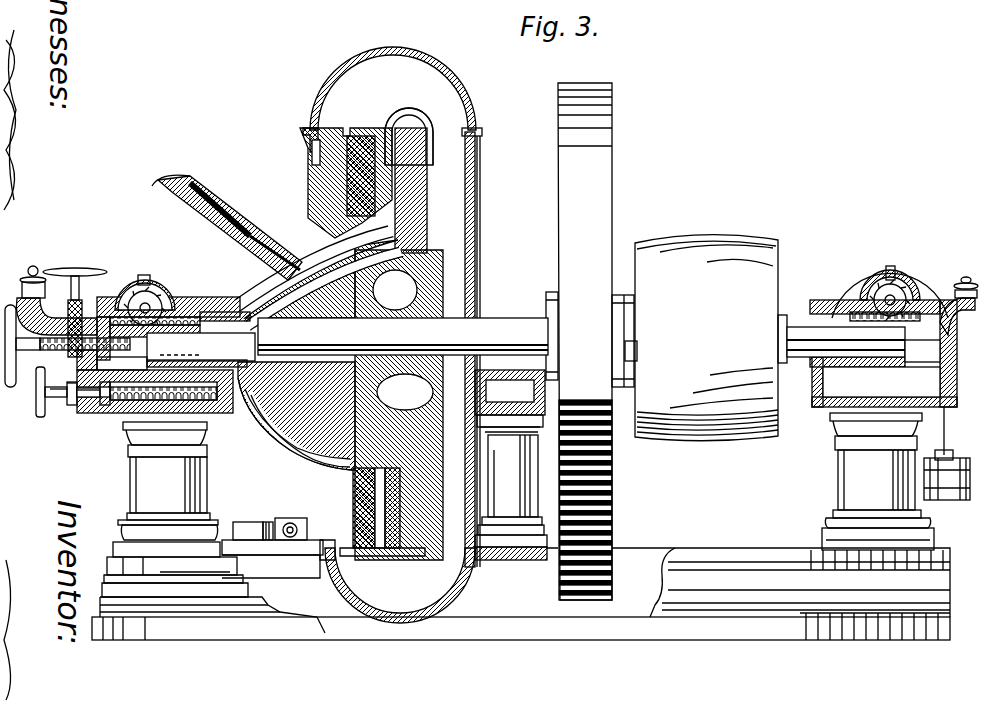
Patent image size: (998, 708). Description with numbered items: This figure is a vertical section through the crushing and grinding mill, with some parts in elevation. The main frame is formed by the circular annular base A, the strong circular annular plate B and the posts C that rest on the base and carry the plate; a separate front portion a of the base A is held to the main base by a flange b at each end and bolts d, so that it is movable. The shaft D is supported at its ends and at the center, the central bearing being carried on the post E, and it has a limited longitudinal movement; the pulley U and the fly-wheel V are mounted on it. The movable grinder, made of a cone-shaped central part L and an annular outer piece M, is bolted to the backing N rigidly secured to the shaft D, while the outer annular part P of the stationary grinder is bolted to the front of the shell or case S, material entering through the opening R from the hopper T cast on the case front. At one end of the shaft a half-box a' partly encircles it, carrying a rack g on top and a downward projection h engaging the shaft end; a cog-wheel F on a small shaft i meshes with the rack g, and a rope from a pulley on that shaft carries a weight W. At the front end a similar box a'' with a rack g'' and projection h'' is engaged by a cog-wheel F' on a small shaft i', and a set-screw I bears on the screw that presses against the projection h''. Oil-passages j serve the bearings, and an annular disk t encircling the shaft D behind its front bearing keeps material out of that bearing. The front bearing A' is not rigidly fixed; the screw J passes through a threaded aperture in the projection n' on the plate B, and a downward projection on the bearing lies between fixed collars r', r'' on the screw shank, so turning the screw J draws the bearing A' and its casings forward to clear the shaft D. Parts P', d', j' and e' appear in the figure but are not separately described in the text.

The circular annular base A is at (521, 591).
The separate front portion of the base a is at (195, 566).
The posts C is at (526, 481).
The post E is at (511, 465).
The fly-wheel V is at (590, 341).
The pulley U is at (706, 338).
The shell or case for the grinders S is at (392, 332).
The backing N is at (340, 334).
The annular outer piece of the movable grinder M is at (385, 125).
The outer annular part of the stationary grinder P is at (346, 172).
The opening R is at (319, 348).
The shaft D is at (403, 336).
The lower block P' is at (382, 526).
The hopper T is at (312, 148).
The central part of the movable grinder L is at (300, 490).
The flange b is at (248, 520).
The bolts d is at (563, 392).
The roller d' is at (291, 516).
The cog-wheel F' is at (168, 311).
The small shaft i' is at (145, 286).
The left pin j' is at (144, 266).
The annular disk t is at (222, 300).
The rack g'' is at (180, 315).
The projection h'' is at (201, 350).
The box a'' is at (180, 343).
The bearing for the front end of the shaft A' is at (122, 368).
The circular annular plate B is at (100, 413).
The projection n' is at (157, 421).
The set-screw I is at (75, 302).
The screw J is at (57, 341).
The fixed collar r' is at (43, 420).
The nut e' is at (62, 418).
The fixed collar r'' is at (79, 428).
The cog-wheel F is at (890, 273).
The rack g is at (883, 353).
The small shaft i is at (878, 286).
The oil-passages j is at (930, 289).
The half-box a' is at (853, 334).
The downward projection h is at (922, 340).
The weight W is at (947, 453).